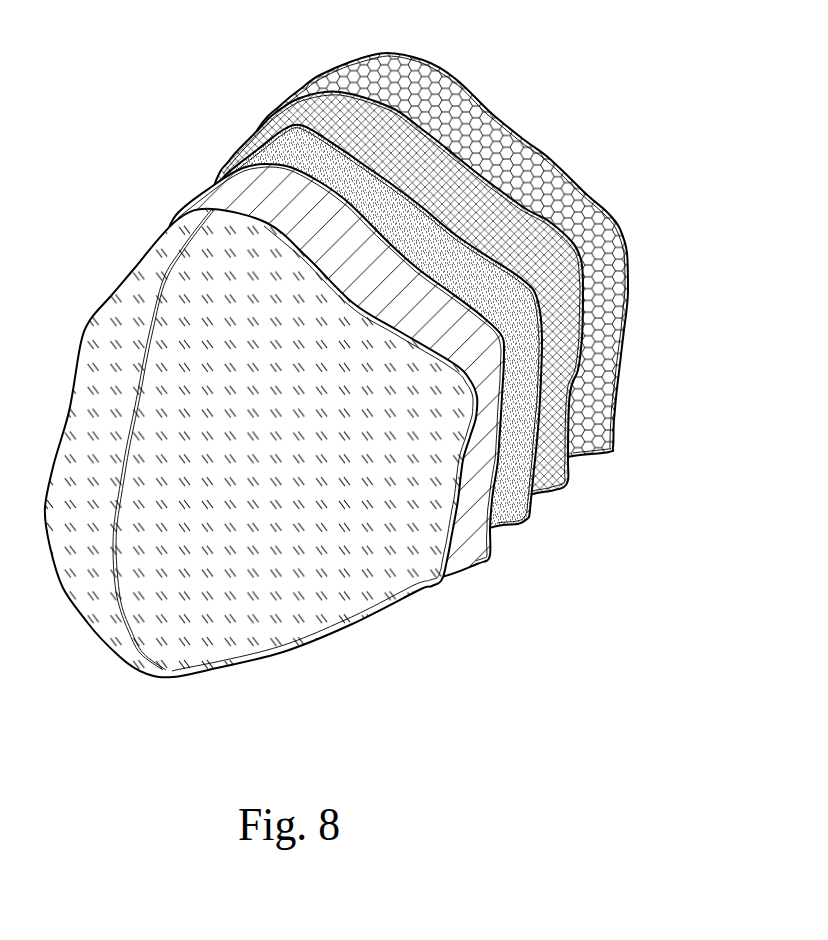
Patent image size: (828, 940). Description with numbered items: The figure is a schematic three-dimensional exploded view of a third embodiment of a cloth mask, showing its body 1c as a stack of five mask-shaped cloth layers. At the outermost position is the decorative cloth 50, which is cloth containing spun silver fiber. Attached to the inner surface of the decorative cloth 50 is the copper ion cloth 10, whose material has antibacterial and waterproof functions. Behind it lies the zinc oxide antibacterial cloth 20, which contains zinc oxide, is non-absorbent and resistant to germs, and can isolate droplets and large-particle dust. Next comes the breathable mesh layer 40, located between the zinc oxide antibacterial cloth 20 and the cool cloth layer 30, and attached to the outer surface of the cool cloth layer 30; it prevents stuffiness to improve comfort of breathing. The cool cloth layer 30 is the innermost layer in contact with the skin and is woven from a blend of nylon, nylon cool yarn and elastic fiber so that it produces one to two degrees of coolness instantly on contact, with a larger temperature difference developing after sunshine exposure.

The body 1c is at (303, 23).
The copper ion cloth 10 is at (465, 548).
The zinc oxide antibacterial cloth 20 is at (513, 503).
The cool cloth layer 30 is at (524, 168).
The breathable mesh layer 40 is at (557, 393).
The decorative cloth 50 is at (313, 623).